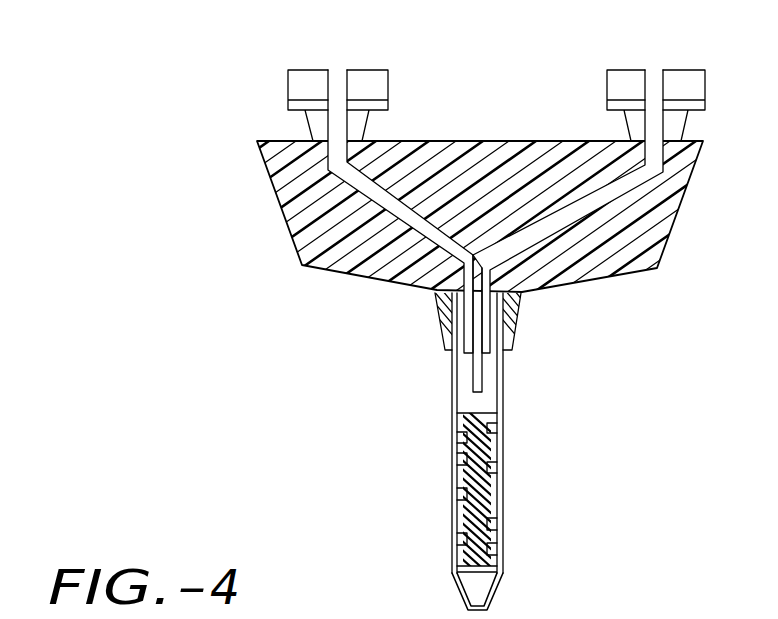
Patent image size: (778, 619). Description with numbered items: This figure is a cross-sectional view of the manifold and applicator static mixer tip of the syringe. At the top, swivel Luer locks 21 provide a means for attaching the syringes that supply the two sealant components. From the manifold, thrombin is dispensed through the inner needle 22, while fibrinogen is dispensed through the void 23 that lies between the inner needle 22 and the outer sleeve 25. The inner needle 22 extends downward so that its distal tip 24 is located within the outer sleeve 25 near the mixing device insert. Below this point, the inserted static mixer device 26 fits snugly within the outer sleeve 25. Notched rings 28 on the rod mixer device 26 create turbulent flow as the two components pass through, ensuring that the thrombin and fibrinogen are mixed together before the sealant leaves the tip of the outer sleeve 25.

The swivel Luer locks 21 is at (350, 52).
The inner needle 22 is at (580, 194).
The void 23 is at (398, 189).
The distal tip 24 is at (483, 392).
The outer sleeve 25 is at (510, 591).
The static mixer device 26 is at (503, 483).
The notched rings 28 is at (492, 450).